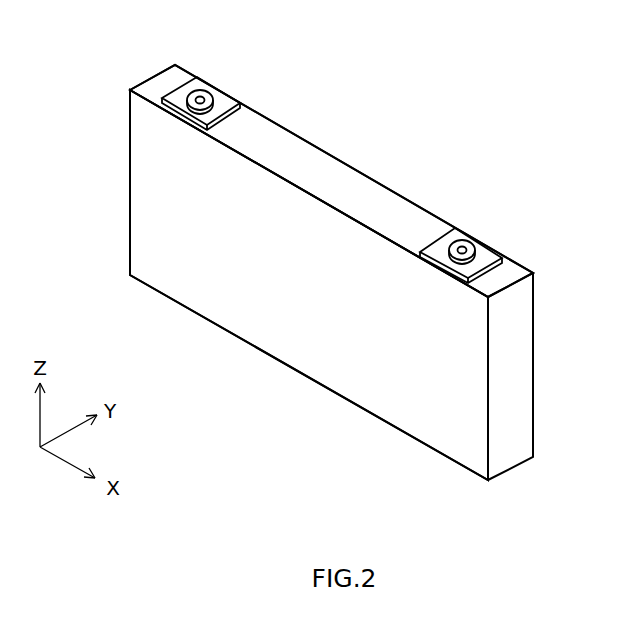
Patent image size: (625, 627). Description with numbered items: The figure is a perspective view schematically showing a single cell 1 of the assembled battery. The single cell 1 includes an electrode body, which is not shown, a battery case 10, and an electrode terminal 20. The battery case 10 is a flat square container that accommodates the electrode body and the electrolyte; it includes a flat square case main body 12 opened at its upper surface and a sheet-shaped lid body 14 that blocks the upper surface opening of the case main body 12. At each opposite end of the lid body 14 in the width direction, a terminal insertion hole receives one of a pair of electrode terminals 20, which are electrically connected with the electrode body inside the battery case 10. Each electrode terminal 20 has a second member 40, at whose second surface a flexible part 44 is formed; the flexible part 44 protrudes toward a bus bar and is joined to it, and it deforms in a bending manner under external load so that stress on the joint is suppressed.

The single cell 1 is at (518, 102).
The battery case 10 is at (405, 193).
The case main body 12 is at (225, 308).
The lid body 14 is at (332, 168).
The electrode terminal 20 is at (194, 83).
The second member 40 is at (331, 177).
The flexible part 44 is at (220, 90).